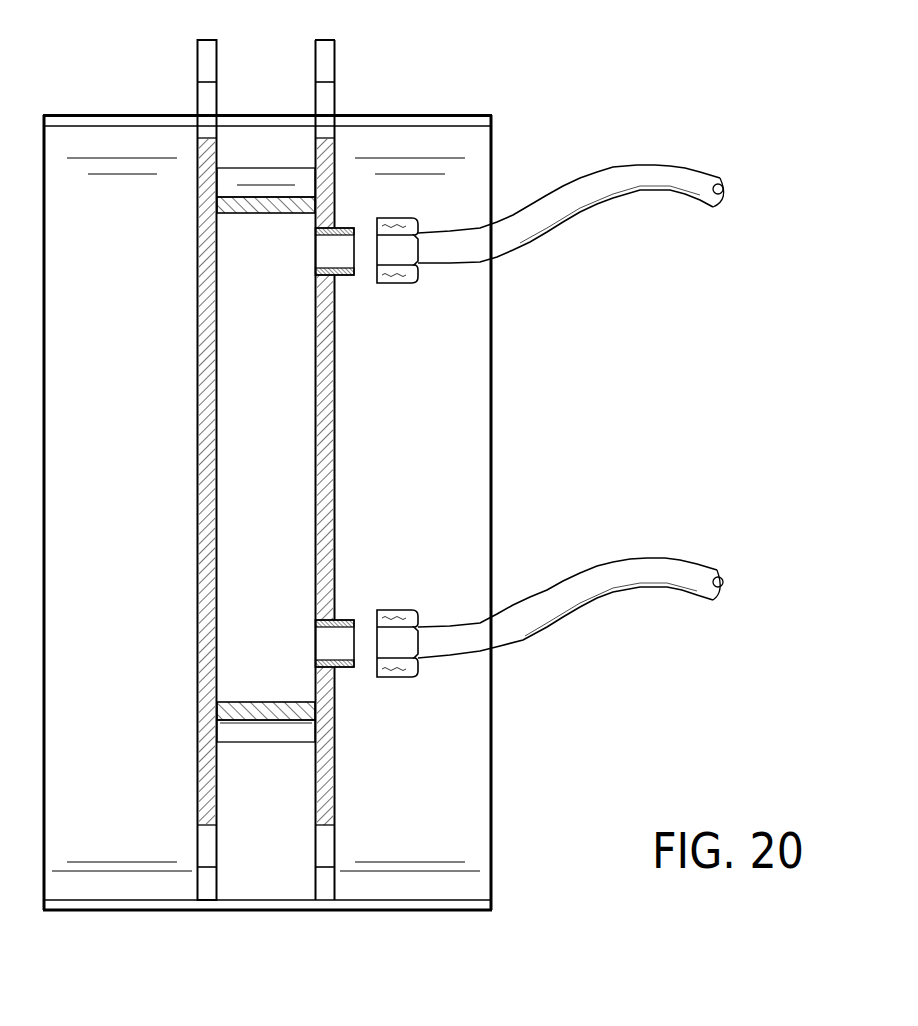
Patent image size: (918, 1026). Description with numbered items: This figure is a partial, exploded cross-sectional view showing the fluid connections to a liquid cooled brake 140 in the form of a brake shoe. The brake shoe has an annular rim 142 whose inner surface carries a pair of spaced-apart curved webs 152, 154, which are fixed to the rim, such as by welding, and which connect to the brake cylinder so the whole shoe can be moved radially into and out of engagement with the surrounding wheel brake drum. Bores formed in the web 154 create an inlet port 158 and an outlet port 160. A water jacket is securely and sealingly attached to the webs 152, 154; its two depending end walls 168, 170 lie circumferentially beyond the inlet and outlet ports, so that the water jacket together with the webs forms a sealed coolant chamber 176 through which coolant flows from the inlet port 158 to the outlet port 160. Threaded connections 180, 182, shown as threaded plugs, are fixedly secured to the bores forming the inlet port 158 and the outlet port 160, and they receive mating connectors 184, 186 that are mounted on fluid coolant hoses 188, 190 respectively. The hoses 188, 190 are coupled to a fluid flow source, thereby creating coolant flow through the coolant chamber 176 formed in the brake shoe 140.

The liquid cooled brake 140 is at (98, 88).
The annular rim 142 is at (453, 330).
The curved web 152 is at (200, 388).
The curved web 154 is at (327, 400).
The inlet port 158 is at (362, 231).
The outlet port 160 is at (335, 630).
The end wall 168 is at (270, 195).
The end wall 170 is at (272, 722).
The coolant chamber 176 is at (282, 467).
The threaded connection 180 is at (360, 242).
The threaded connection 182 is at (343, 670).
The mating connector 184 is at (412, 222).
The mating connector 186 is at (413, 677).
The fluid coolant hose 188 is at (643, 173).
The fluid coolant hose 190 is at (670, 570).